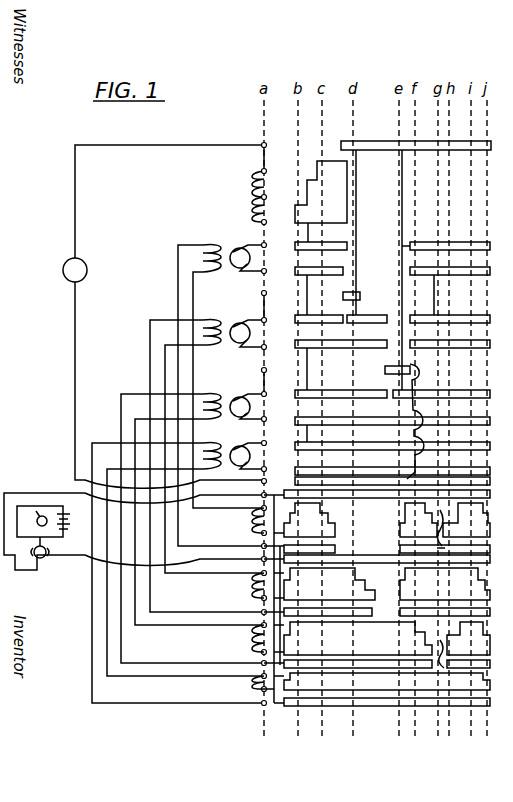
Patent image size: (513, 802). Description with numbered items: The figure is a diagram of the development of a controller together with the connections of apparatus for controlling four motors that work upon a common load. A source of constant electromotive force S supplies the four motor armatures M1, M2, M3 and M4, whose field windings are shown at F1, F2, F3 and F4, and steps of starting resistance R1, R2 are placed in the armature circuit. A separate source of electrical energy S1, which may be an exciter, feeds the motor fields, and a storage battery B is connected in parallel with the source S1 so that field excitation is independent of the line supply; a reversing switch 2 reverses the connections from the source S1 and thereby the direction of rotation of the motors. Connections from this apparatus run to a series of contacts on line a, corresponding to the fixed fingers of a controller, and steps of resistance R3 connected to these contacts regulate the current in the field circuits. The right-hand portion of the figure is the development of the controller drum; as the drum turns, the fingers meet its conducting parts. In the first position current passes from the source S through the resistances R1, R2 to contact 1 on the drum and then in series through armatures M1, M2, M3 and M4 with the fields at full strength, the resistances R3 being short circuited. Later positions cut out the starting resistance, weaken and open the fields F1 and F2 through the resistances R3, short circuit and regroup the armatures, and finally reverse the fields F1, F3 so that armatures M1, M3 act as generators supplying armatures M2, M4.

The contact on the drum 1 is at (321, 201).
The reversing switch 2 is at (43, 558).
The source of constant electromotive force S is at (75, 270).
The source of electrical energy S1 is at (33, 520).
The storage battery B is at (69, 522).
The step of starting resistance R1 is at (247, 184).
The step of starting resistance R2 is at (247, 209).
The field resistance steps R3 is at (247, 603).
The field winding F1 is at (221, 395).
The field winding F2 is at (207, 456).
The field winding F3 is at (192, 518).
The field winding F4 is at (178, 563).
The motor armature M1 is at (246, 247).
The motor armature M2 is at (246, 323).
The motor armature M3 is at (246, 395).
The motor armature M4 is at (246, 445).